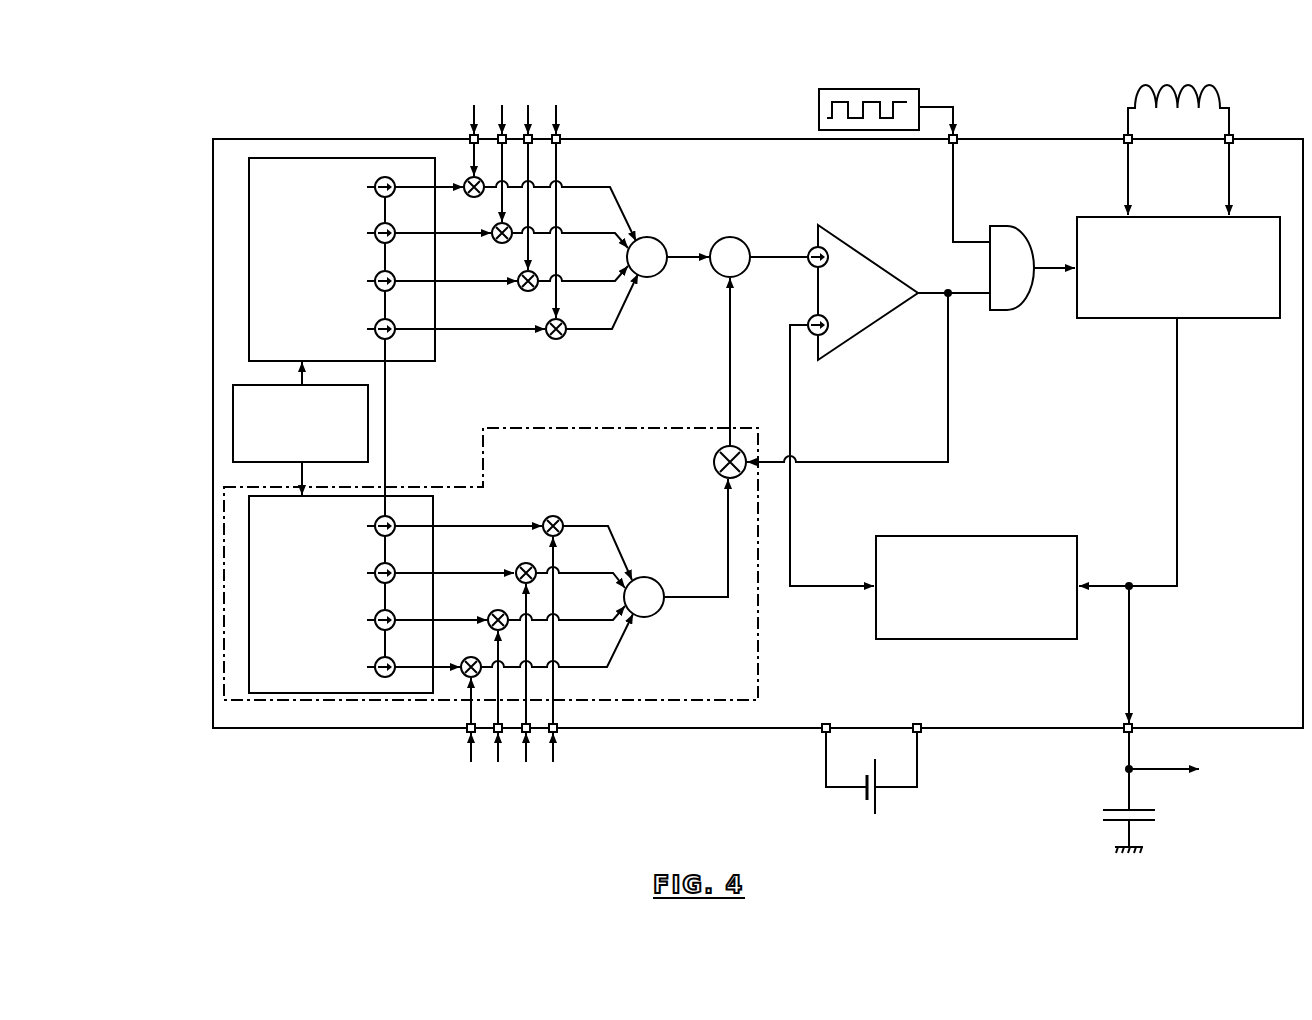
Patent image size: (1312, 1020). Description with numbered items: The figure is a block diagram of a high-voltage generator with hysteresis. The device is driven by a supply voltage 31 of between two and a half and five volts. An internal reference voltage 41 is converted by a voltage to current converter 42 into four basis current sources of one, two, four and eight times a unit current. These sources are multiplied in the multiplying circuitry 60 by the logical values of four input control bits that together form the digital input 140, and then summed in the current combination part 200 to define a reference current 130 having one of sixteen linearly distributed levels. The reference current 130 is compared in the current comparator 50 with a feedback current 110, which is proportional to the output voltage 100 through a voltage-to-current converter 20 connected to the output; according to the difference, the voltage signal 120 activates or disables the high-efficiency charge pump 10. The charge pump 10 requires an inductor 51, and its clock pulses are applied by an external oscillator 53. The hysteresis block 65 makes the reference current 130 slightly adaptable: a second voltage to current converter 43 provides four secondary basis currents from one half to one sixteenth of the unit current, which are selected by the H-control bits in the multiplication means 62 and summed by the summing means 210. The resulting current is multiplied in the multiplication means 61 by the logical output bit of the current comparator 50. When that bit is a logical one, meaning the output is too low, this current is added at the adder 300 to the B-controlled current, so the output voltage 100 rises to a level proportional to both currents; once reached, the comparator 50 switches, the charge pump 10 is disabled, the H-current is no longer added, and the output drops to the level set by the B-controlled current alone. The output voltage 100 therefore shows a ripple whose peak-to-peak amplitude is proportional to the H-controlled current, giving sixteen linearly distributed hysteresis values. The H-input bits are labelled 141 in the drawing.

The charge pump 10 is at (1210, 325).
The voltage-to-current converter 20 is at (1000, 533).
The supply voltage 31 is at (920, 787).
The reference voltage 41 is at (233, 416).
The voltage to current converter 42 is at (310, 155).
The voltage to current converter 43 is at (249, 536).
The current comparator 50 is at (847, 347).
The inductor 51 is at (1138, 82).
The external oscillator 53 is at (868, 82).
The multiplying circuitry 60 is at (563, 338).
The multiplication means 61 is at (712, 462).
The multiplication means 62 is at (562, 519).
The hysteresis block 65 is at (222, 616).
The output voltage 100 is at (1127, 796).
The feedback current 110 is at (809, 592).
The voltage signal 120 is at (1048, 262).
The reference current 130 is at (692, 262).
The digital input 140 is at (502, 68).
The control bit inputs H 141 is at (511, 806).
The current combination part 200 is at (662, 233).
The summing means 210 is at (662, 614).
The adding 300 is at (745, 242).